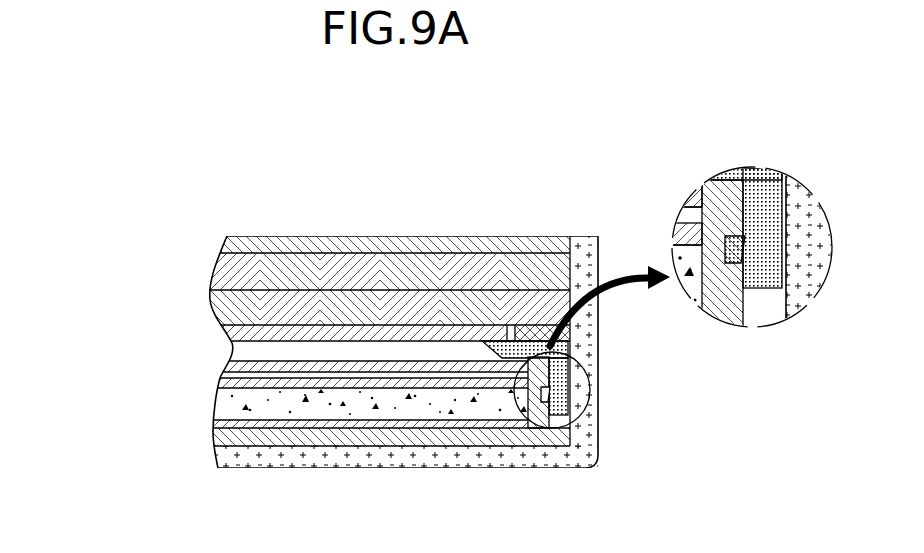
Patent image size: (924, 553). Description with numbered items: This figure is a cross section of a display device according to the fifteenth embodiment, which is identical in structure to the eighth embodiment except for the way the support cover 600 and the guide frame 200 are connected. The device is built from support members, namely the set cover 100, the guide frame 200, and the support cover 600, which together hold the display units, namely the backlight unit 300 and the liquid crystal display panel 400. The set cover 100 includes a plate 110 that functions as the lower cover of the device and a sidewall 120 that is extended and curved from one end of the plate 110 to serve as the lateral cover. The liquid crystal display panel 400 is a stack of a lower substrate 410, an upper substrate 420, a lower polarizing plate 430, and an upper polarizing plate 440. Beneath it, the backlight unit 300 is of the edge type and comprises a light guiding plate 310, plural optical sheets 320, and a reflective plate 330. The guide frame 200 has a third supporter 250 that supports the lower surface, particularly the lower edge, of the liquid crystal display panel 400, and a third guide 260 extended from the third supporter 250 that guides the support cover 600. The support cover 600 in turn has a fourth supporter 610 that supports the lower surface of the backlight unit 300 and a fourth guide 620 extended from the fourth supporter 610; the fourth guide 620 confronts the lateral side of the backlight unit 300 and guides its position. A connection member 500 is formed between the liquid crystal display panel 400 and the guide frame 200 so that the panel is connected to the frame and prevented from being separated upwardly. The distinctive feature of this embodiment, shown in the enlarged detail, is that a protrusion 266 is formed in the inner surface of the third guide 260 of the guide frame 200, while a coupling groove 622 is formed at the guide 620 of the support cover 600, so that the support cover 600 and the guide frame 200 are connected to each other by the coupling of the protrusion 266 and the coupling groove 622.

The set cover 100 is at (468, 361).
The plate 110 is at (560, 466).
The sidewall 120 is at (548, 426).
The guide frame 200 is at (609, 377).
The third supporter 250 is at (532, 360).
The third guide 260 is at (570, 388).
The protrusion 266 is at (768, 240).
The backlight unit 300 is at (308, 398).
The light guiding plate 310 is at (215, 403).
The optical sheets 320 is at (221, 386).
The reflective plate 330 is at (214, 428).
The liquid crystal display panel 400 is at (308, 290).
The lower substrate 410 is at (222, 308).
The upper substrate 420 is at (214, 277).
The lower polarizing plate 430 is at (232, 339).
The upper polarizing plate 440 is at (228, 243).
The connection member 500 is at (527, 331).
The support cover 600 is at (498, 455).
The fourth supporter 610 is at (462, 437).
The fourth guide 620 is at (543, 402).
The coupling groove 622 is at (727, 252).